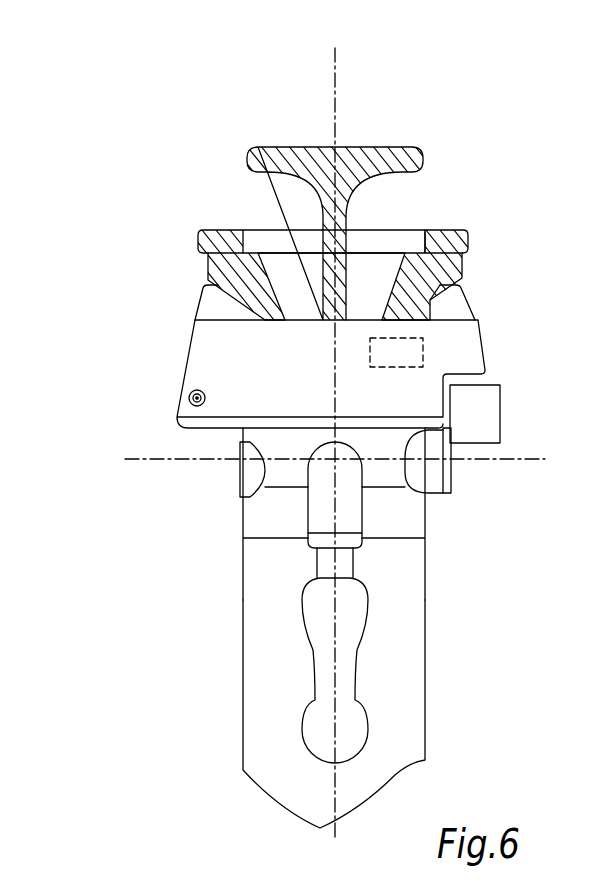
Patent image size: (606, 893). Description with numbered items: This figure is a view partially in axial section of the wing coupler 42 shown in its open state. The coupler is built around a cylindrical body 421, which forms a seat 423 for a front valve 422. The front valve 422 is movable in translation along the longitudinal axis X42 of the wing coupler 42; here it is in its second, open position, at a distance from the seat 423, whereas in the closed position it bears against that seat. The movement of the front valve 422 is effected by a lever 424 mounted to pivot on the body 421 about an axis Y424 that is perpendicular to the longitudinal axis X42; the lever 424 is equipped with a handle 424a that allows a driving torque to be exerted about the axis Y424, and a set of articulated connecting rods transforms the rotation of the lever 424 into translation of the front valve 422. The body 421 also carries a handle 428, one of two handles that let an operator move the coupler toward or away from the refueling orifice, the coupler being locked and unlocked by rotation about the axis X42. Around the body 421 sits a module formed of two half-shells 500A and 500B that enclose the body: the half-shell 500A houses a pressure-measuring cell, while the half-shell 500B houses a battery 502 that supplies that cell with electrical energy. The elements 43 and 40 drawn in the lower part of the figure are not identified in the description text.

The wing coupler 42 is at (143, 248).
The longitudinal axis X42 is at (339, 431).
The front valve 422 is at (368, 162).
The seat 423 is at (419, 247).
The cylindrical body 421 is at (473, 236).
The half-shell 500B is at (457, 303).
The half-shell 500A is at (205, 362).
The battery 502 is at (412, 353).
The handle 424a is at (487, 413).
The pivot axis Y424 is at (358, 458).
The lever 424 is at (450, 472).
The arm 43 is at (418, 552).
The handle 428 is at (317, 725).
The holder 40 is at (410, 732).